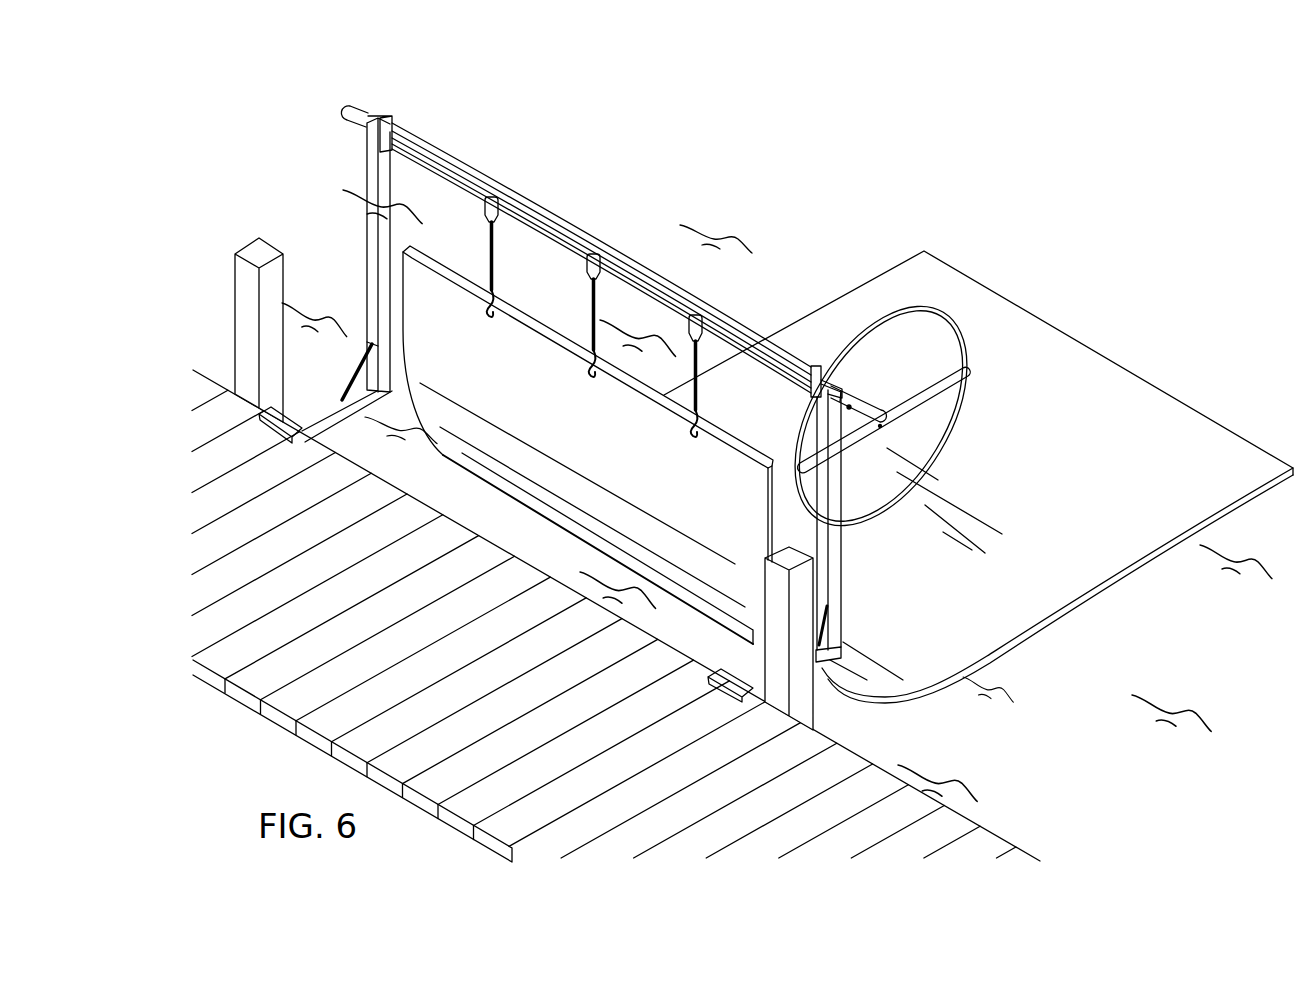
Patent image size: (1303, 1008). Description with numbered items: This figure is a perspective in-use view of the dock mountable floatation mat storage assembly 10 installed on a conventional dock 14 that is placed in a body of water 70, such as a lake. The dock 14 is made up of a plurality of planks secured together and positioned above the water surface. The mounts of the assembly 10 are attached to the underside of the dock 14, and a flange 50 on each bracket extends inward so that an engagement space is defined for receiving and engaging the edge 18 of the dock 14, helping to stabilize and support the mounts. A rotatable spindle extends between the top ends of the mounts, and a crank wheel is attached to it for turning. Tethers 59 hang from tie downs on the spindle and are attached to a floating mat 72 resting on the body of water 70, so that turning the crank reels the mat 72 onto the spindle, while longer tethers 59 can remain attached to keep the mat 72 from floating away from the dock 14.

The dock mountable floatation mat storage assembly 10 is at (580, 158).
The dock 14 is at (287, 699).
The edge 18 is at (850, 748).
The flange 50 is at (285, 428).
The tethers 59 is at (487, 252).
The body of water 70 is at (1066, 760).
The floating mat 72 is at (1128, 393).